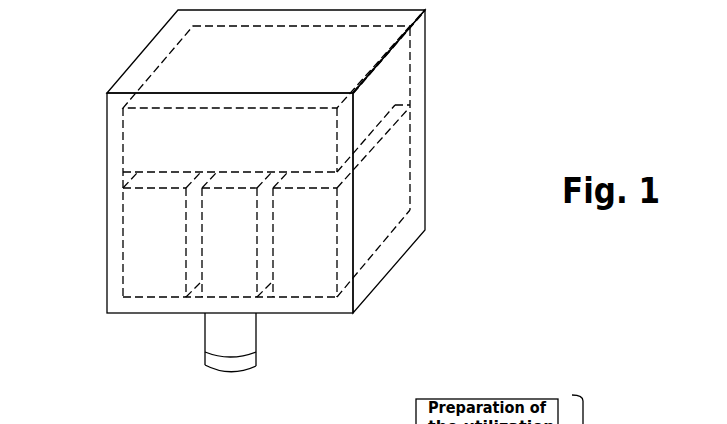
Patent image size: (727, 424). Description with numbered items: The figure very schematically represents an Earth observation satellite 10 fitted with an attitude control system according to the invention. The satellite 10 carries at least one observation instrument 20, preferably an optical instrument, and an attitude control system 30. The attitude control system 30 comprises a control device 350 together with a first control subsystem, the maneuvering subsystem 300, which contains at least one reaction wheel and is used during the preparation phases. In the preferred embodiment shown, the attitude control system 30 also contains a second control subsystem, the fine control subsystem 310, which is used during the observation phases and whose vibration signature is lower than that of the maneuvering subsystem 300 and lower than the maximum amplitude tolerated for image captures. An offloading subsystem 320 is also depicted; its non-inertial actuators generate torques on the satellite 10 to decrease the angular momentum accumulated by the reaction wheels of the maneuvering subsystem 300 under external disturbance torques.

The Earth observation satellite 10 is at (460, 107).
The observation instrument 20 is at (247, 334).
The attitude control system 30 is at (104, 184).
The maneuvering subsystem 300 is at (140, 252).
The fine control subsystem 310 is at (207, 267).
The offloading subsystem 320 is at (307, 270).
The control device 350 is at (140, 135).